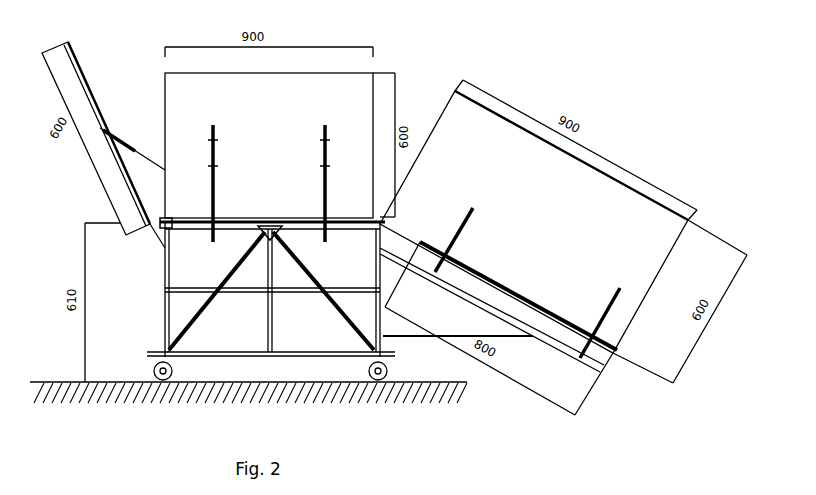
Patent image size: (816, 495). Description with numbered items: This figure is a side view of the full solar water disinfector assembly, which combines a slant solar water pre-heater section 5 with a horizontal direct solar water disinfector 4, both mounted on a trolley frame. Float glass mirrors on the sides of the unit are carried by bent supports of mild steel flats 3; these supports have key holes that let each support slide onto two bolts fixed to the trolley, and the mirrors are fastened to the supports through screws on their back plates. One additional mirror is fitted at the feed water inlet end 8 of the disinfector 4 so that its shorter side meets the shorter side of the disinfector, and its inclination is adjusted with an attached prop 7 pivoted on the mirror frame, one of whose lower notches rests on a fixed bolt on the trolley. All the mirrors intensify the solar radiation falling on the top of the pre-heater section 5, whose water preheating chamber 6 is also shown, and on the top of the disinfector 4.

The mild steel flats 3 is at (323, 167).
The direct solar water disinfector 4 is at (312, 226).
The water pre-heater section 5 is at (607, 362).
The water preheating chamber 6 is at (512, 337).
The prop 7 is at (265, 235).
The feed water inlet end 8 is at (170, 228).